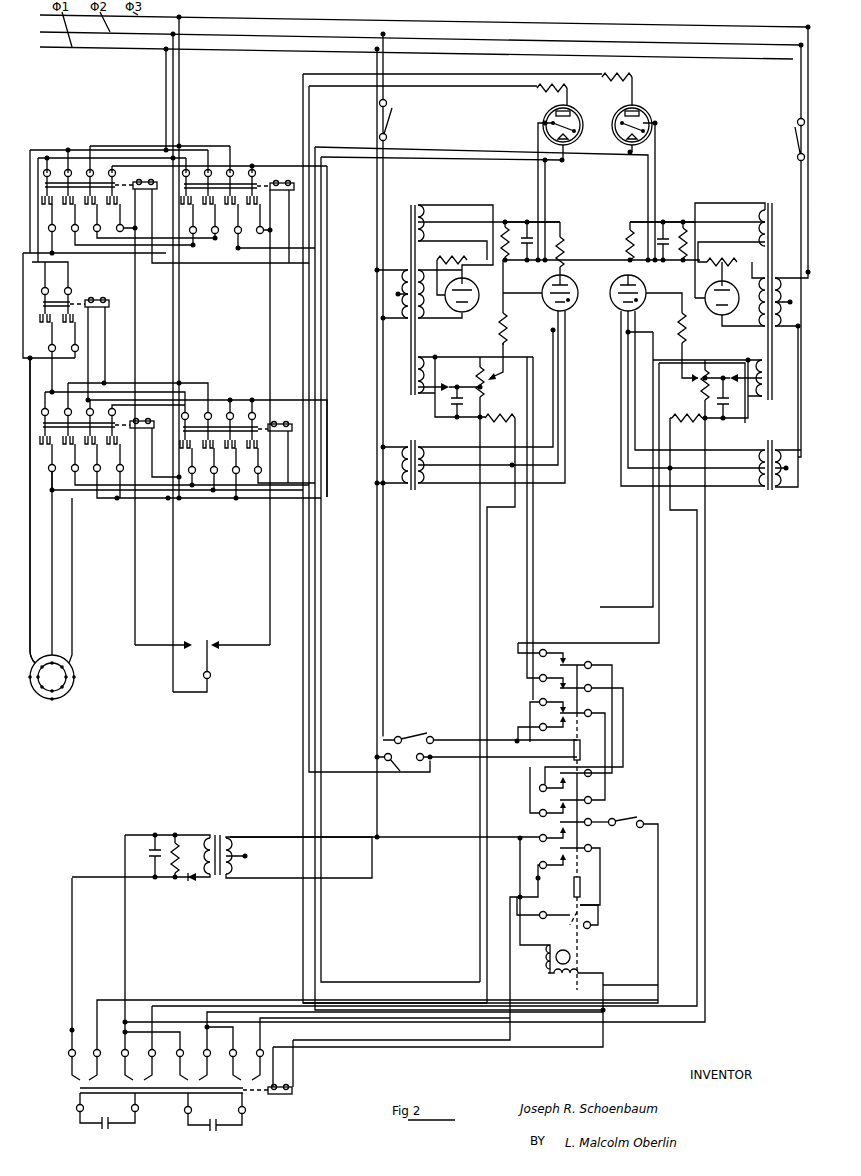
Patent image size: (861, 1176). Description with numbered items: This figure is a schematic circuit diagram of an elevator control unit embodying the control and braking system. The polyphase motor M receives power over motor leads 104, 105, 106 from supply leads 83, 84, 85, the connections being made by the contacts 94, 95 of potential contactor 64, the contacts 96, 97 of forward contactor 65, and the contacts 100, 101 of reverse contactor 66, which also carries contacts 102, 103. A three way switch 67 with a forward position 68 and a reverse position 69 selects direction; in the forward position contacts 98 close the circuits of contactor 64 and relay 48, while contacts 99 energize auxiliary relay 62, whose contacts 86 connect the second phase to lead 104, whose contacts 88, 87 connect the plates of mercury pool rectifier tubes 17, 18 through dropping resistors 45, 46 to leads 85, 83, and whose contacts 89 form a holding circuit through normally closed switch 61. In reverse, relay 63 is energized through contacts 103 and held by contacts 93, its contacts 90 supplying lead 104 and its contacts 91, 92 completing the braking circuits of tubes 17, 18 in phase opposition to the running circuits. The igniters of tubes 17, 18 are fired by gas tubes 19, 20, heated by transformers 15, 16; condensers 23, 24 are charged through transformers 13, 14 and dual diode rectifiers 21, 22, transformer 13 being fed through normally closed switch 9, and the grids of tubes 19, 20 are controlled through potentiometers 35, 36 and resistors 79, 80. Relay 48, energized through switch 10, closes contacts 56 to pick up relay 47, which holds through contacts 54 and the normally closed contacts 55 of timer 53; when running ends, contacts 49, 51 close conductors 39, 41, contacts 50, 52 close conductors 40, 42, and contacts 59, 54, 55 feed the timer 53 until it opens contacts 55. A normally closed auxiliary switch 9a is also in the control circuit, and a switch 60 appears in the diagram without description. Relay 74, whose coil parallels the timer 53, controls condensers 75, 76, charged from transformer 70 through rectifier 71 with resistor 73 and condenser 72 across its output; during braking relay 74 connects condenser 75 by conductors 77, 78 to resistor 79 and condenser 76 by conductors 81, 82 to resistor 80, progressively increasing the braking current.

The normally closed switch 9 is at (386, 133).
The normally closed auxiliary switch 9a is at (794, 136).
The switch 10 is at (410, 734).
The transformer 13 is at (413, 204).
The transformer 14 is at (765, 205).
The transformer 15 is at (413, 492).
The transformer 16 is at (772, 491).
The igniter controlled mercury pool rectifier tube 17 is at (545, 124).
The igniter controlled mercury pool rectifier tube 18 is at (654, 122).
The gas filled triode 19 is at (574, 284).
The gas tube 20 is at (600, 289).
The dual diode rectifier tube 21 is at (469, 314).
The dual diode rectifier 22 is at (718, 323).
The condenser 23 is at (513, 220).
The condenser 24 is at (670, 222).
The potentiometer 35 is at (496, 381).
The potentiometer 36 is at (696, 383).
The conductor 39 is at (537, 540).
The conductor 40 is at (648, 582).
The conductor 41 is at (526, 582).
The conductor 42 is at (659, 572).
The dropping resistor 45 is at (546, 87).
The dropping resistor 46 is at (606, 79).
The relay 47 is at (583, 889).
The relay 48 is at (580, 755).
The contacts 49 is at (540, 812).
The contacts 50 is at (540, 785).
The contacts 51 is at (539, 674).
The contacts 52 is at (540, 645).
The timer 53 is at (465, 942).
The contacts 54 is at (540, 866).
The normally closed contacts 55 is at (557, 913).
The contacts 56 is at (538, 725).
The contacts 59 is at (538, 700).
The switch 60 is at (402, 772).
The normally closed switch 61 is at (632, 824).
The auxiliary relay 62 is at (177, 406).
The relay 63 is at (239, 406).
The potential contactor 64 is at (76, 342).
The forward direction contactor 65 is at (111, 442).
The reverse direction contactor 66 is at (237, 444).
The three way switch 67 is at (210, 676).
The forward position 68 is at (163, 637).
The reverse position 69 is at (240, 637).
The transformer 70 is at (222, 849).
The rectifier 71 is at (188, 884).
The condenser 72 is at (150, 856).
The resistor 73 is at (177, 866).
The relay 74 is at (296, 1096).
The condenser 75 is at (99, 1135).
The condenser 76 is at (208, 1138).
The conductor 77 is at (478, 526).
The conductor 78 is at (497, 528).
The resistor 79 is at (503, 410).
The resistor 80 is at (687, 413).
The conductor 81 is at (690, 530).
The conductor 82 is at (702, 528).
The lead 83 is at (165, 118).
The lead 84 is at (171, 92).
The lead 85 is at (180, 102).
The contacts 86 is at (46, 201).
The contacts 87 is at (69, 201).
The contacts 88 is at (92, 201).
The contacts 89 is at (115, 201).
The contacts 90 is at (188, 202).
The contacts 91 is at (210, 202).
The contacts 92 is at (233, 202).
The contacts 93 is at (255, 202).
The contacts 94 is at (45, 320).
The contacts 95 is at (68, 320).
The contacts 96 is at (45, 440).
The contacts 97 is at (68, 440).
The contacts 98 is at (90, 440).
The contacts 99 is at (113, 440).
The contacts 100 is at (187, 443).
The contacts 101 is at (210, 443).
The relay contact 102 is at (232, 443).
The contacts 103 is at (254, 443).
The motor lead 104 is at (32, 590).
The motor lead 105 is at (55, 608).
The motor lead 106 is at (72, 638).
The polyphase alternating current motor M is at (59, 678).